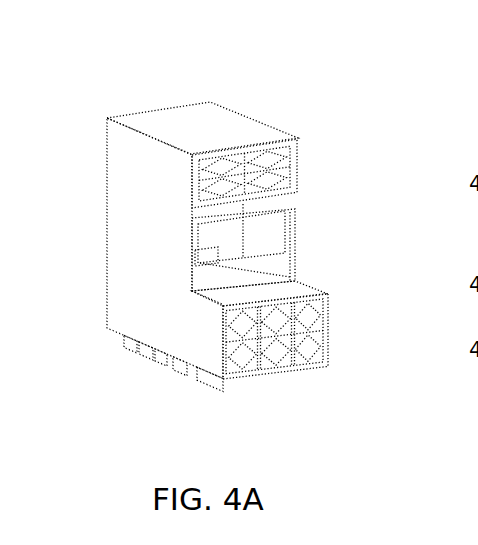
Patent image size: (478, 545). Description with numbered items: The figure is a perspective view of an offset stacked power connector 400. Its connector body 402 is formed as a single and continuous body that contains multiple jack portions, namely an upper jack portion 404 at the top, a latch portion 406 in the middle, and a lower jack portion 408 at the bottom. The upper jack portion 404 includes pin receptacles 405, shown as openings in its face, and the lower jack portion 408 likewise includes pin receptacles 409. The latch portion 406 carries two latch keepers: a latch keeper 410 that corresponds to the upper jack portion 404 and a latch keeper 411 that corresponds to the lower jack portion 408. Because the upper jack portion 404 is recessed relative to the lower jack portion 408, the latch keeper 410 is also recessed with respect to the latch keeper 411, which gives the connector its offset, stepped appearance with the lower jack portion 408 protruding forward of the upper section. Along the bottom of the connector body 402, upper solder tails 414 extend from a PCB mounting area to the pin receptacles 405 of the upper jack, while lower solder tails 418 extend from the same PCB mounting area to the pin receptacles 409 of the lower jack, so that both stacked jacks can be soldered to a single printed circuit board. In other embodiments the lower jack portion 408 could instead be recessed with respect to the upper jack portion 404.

The offset stacked power connector 400 is at (83, 57).
The connector body 402 is at (168, 244).
The upper jack portion 404 is at (277, 126).
The pin receptacles 405 is at (253, 197).
The latch portion 406 is at (199, 244).
The lower jack portion 408 is at (215, 344).
The pin receptacles 409 is at (260, 327).
The latch keeper 410 is at (222, 219).
The latch keeper 411 is at (273, 293).
The upper solder tails 414 is at (143, 357).
The lower solder tails 418 is at (180, 367).